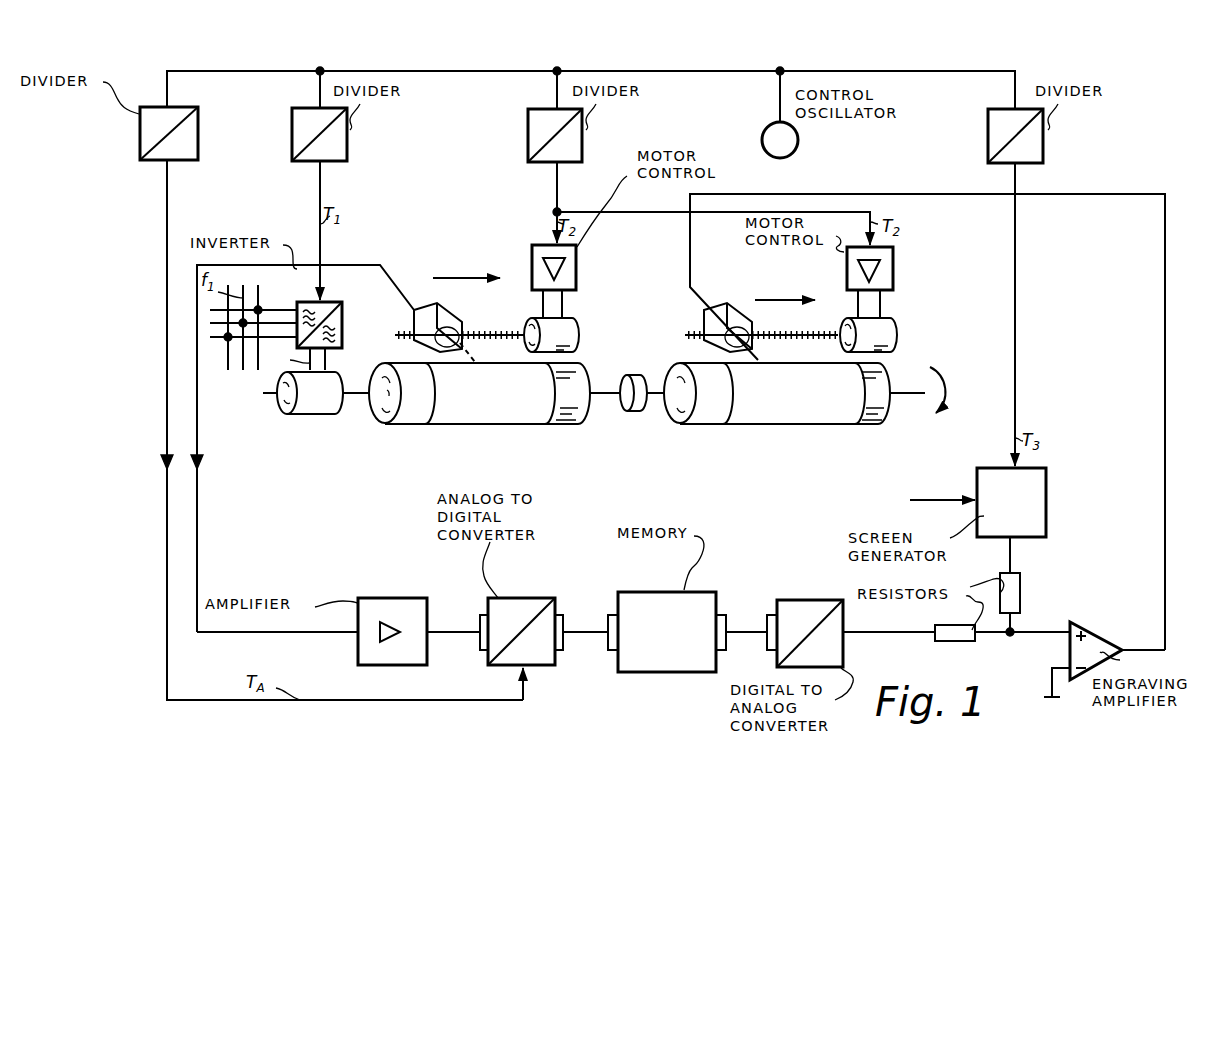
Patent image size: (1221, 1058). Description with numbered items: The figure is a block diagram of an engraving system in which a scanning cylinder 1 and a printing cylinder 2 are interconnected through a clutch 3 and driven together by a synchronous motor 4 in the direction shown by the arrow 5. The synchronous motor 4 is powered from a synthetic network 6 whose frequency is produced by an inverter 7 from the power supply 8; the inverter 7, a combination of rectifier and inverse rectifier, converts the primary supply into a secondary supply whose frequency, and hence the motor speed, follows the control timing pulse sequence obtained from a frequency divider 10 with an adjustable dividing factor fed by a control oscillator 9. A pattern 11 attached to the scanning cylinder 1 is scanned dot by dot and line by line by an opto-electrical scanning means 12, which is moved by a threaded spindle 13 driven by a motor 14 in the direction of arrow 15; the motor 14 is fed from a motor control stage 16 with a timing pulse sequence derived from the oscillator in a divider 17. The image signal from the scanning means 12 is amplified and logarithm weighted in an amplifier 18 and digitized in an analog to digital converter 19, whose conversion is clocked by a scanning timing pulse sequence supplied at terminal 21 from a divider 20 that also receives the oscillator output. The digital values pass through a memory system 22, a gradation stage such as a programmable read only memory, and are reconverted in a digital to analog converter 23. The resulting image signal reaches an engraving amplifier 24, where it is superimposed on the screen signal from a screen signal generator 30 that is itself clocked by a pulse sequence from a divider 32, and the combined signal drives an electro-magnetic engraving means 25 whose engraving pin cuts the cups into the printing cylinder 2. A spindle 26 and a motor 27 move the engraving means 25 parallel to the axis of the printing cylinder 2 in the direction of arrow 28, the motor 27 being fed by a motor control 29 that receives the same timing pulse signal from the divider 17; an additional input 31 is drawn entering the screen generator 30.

The scanning cylinder 1 is at (571, 405).
The printing cylinder 2 is at (702, 411).
The clutch 3 is at (628, 406).
The synchronous motor 4 is at (314, 408).
The arrow 5 is at (948, 406).
The synthetic network 6 is at (326, 361).
The inverter 7 is at (342, 318).
The power supply 8 is at (247, 352).
The control oscillator 9 is at (798, 142).
The frequency divider 10 is at (347, 143).
The pattern 11 is at (480, 411).
The opto-electrical scanning means 12 is at (414, 310).
The spindle 13 is at (500, 330).
The motor 14 is at (578, 332).
The arrow 15 is at (458, 273).
The motor control stage 16 is at (576, 270).
The divider 17 is at (582, 144).
The amplifier 18 is at (396, 610).
The analog to digital converter 19 is at (528, 606).
The divider 20 is at (198, 144).
The terminal 21 is at (529, 674).
The memory system 22 is at (658, 606).
The digital to analog converter 23 is at (812, 612).
The engraving amplifier 24 is at (1092, 636).
The electro-magnetic engraving means 25 is at (704, 310).
The spindle 26 is at (786, 338).
The motor 27 is at (894, 332).
The arrow 28 is at (780, 296).
The motor control 29 is at (894, 270).
The screen signal generator 30 is at (1034, 501).
The screen generator input 31 is at (938, 496).
The divider 32 is at (1043, 144).